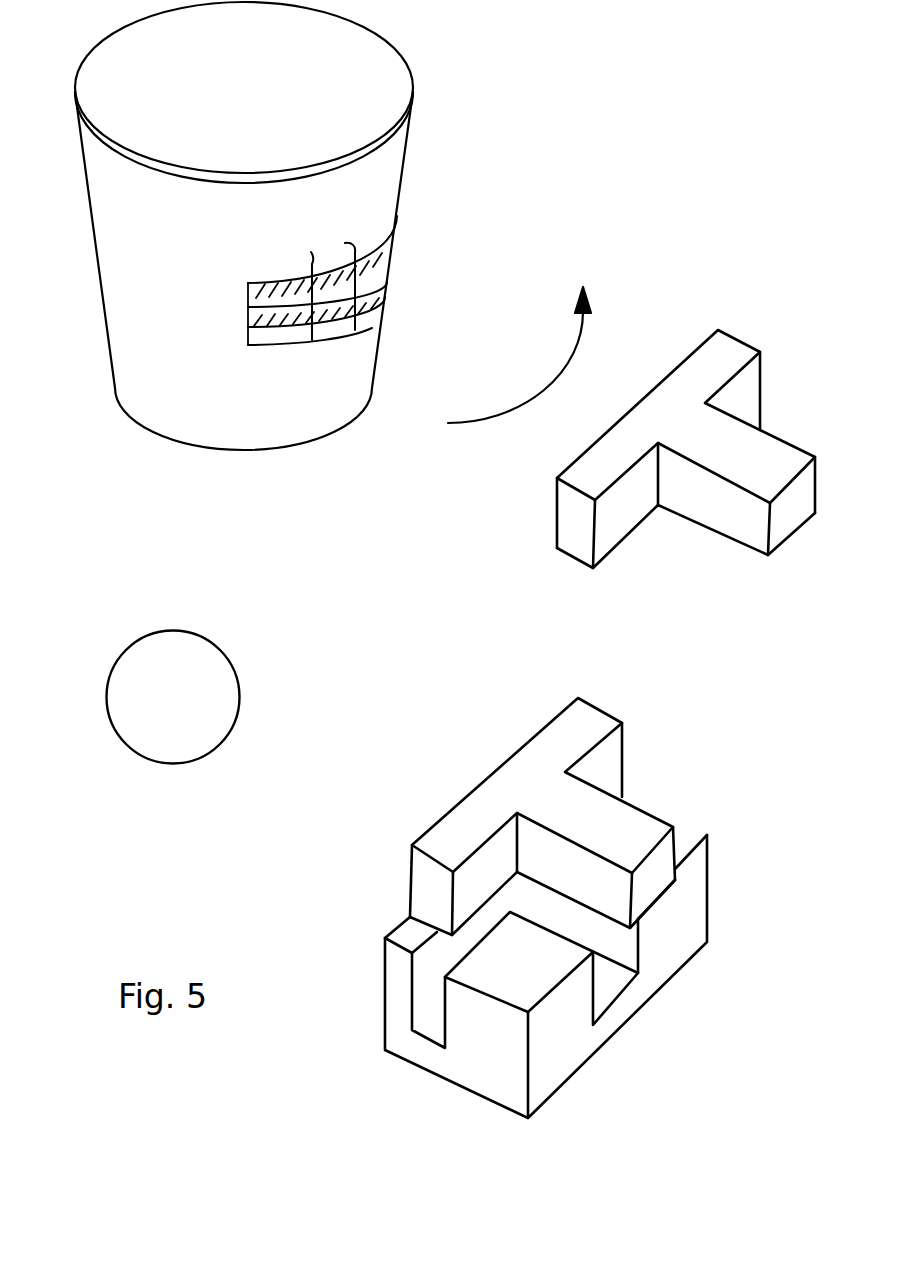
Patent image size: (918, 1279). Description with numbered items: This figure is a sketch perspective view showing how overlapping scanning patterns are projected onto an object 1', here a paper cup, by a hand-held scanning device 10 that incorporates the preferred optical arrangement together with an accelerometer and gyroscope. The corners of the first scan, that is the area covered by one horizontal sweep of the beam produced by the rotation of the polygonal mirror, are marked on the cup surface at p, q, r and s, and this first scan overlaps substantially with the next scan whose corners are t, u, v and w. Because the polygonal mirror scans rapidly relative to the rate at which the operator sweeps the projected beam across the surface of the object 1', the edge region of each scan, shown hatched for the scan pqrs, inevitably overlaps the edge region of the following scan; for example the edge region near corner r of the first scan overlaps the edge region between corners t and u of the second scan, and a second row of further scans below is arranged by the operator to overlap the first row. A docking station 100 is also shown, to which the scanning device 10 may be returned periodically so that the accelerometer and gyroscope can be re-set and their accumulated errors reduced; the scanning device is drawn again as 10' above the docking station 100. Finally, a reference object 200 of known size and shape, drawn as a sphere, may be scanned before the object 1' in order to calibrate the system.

The object 1' is at (275, 226).
The scanning device 10 is at (686, 458).
The T-shaped block 10' is at (557, 816).
The docking station 100 is at (707, 895).
The reference object 200 is at (233, 727).
The corner of first scan p is at (248, 283).
The corner of first scan q is at (248, 327).
The corner of first scan r is at (344, 280).
The corner of first scan s is at (359, 330).
The corner of next scan t is at (307, 285).
The corner of next scan u is at (316, 328).
The corner of next scan v is at (396, 212).
The corner of next scan w is at (387, 282).